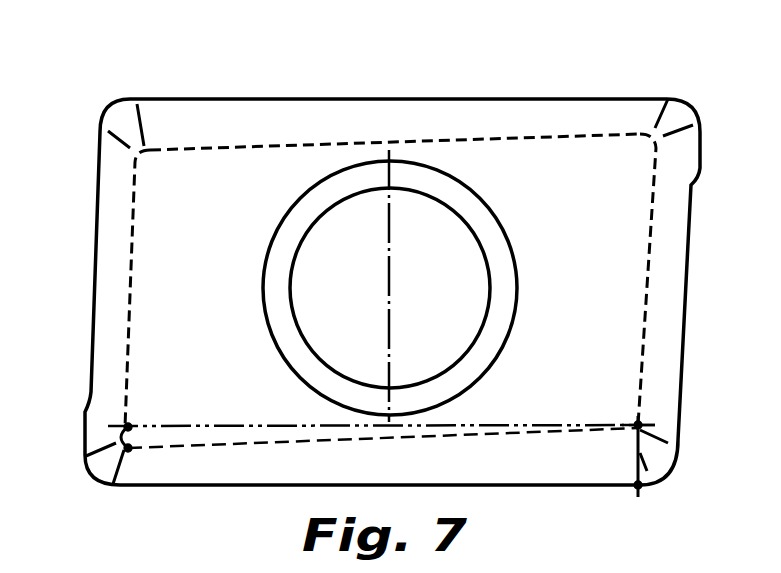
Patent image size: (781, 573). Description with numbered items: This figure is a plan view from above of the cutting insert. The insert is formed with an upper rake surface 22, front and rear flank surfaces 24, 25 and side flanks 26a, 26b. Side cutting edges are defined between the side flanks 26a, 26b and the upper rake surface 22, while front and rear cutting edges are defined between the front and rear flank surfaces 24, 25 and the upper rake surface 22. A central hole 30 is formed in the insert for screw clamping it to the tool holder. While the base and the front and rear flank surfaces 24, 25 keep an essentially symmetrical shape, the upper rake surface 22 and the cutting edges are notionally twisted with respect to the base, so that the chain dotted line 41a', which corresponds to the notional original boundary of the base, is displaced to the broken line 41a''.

The upper rake surface 22 is at (213, 339).
The front flank surface 24 is at (92, 288).
The rear flank surface 25 is at (658, 333).
The side flank 26a is at (497, 485).
The side flank 26b is at (356, 98).
The central hole 30 is at (442, 291).
The chain dotted line 41a' is at (381, 393).
The broken line 41a'' is at (383, 487).